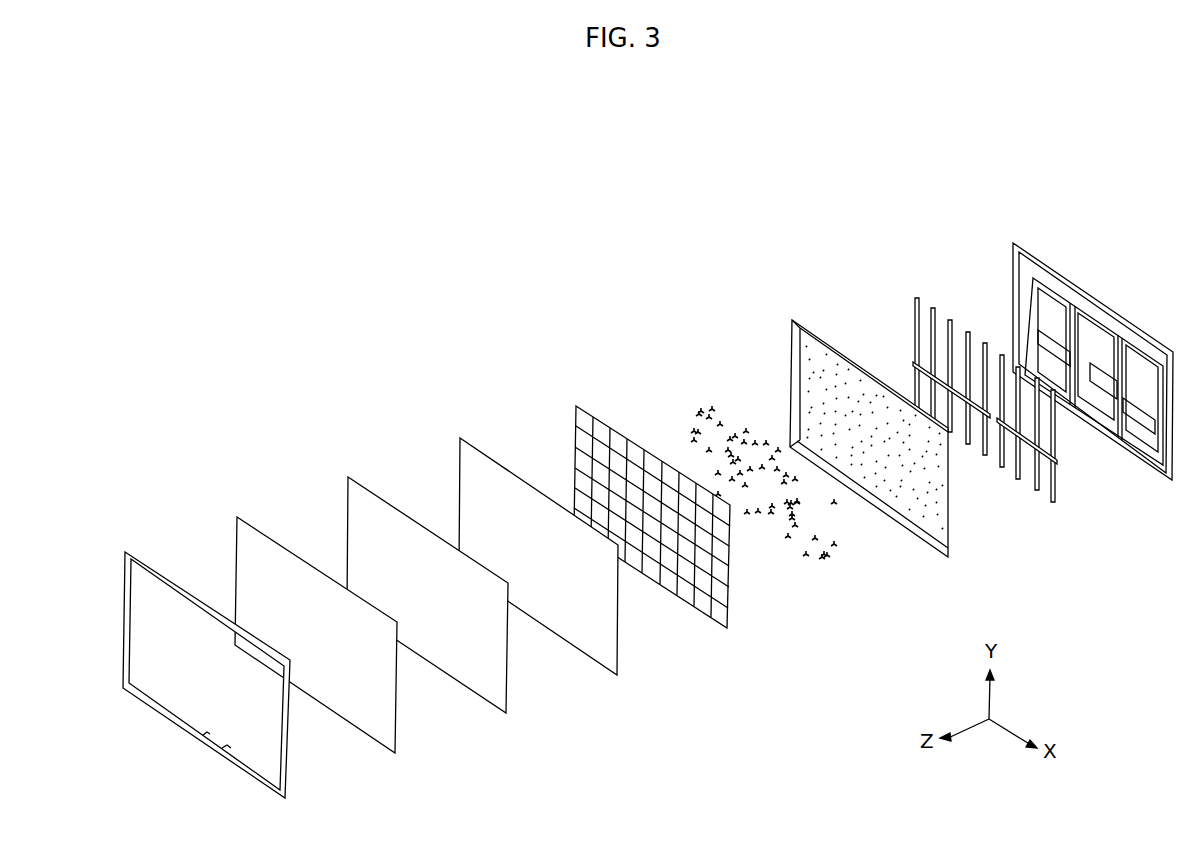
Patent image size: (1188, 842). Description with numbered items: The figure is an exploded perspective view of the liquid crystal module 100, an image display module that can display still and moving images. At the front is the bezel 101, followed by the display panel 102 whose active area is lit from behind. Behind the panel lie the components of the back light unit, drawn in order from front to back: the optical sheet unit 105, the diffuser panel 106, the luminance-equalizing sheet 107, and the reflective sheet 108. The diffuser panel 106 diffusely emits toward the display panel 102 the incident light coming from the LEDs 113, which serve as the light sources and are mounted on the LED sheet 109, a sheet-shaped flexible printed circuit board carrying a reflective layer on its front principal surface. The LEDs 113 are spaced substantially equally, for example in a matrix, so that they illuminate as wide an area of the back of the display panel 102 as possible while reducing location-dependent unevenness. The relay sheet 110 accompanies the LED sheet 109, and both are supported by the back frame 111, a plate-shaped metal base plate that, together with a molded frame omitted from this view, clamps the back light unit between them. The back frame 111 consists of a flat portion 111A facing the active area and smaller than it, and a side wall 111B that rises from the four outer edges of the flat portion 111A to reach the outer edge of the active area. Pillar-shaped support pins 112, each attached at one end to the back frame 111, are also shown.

The liquid crystal module 100 is at (931, 197).
The bezel 101 is at (135, 550).
The display panel 102 is at (239, 517).
The optical sheet unit 105 is at (348, 477).
The diffuser panel 106 is at (460, 438).
The luminance-equalizing sheet 107 is at (576, 406).
The reflective sheet 108 is at (794, 320).
The LED sheet 109 is at (917, 298).
The relay sheet 110 is at (950, 400).
The back frame 111 is at (1032, 334).
The flat portion 111A is at (1048, 300).
The side wall 111B is at (1013, 243).
The support pins 112 is at (703, 382).
The LEDs 113 is at (913, 366).